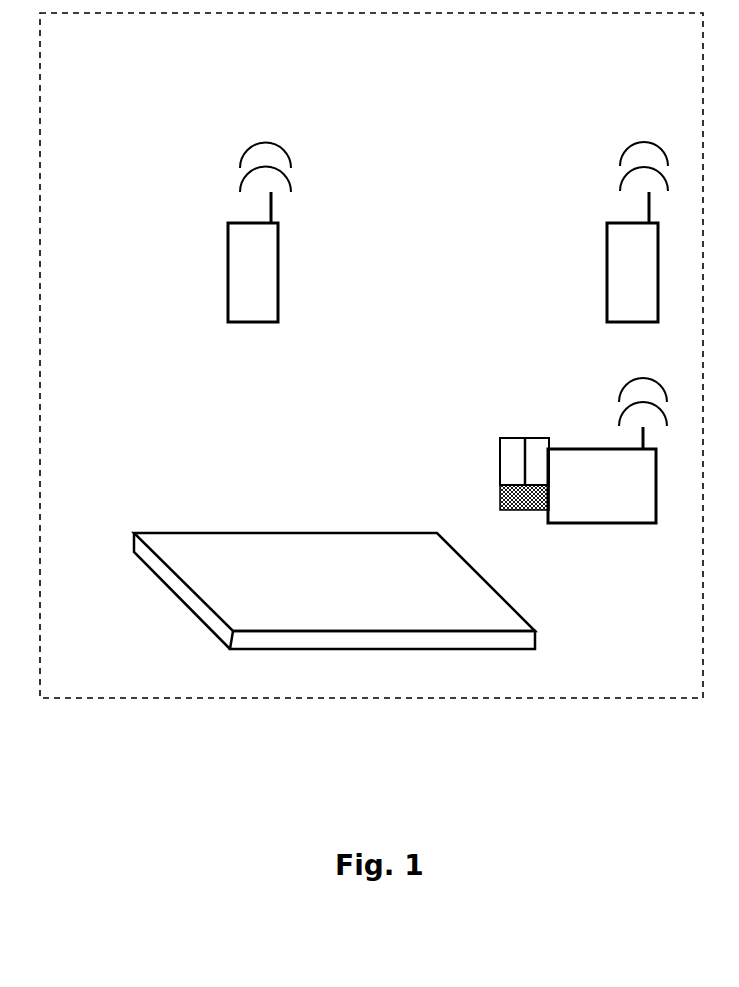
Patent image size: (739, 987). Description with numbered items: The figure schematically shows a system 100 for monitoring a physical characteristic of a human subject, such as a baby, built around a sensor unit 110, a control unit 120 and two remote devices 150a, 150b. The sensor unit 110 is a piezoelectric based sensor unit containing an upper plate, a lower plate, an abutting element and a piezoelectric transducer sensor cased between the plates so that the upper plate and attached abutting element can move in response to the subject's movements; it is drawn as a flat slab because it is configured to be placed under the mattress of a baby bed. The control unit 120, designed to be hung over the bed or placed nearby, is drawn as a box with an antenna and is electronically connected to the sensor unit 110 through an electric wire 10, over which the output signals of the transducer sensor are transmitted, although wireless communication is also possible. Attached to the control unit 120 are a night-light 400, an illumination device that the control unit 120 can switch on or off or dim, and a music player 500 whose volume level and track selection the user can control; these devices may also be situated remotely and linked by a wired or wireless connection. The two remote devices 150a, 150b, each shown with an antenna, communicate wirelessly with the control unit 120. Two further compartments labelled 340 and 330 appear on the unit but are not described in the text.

The system 100 is at (643, 64).
The remote device 150a is at (607, 273).
The remote device 150b is at (228, 261).
The control unit 120 is at (578, 491).
The sensor element 340 is at (513, 438).
The sensor element 330 is at (534, 438).
The night-light 400 is at (495, 488).
The music player 500 is at (500, 510).
The sensor unit 110 is at (376, 596).
The electric wire 10 is at (504, 489).